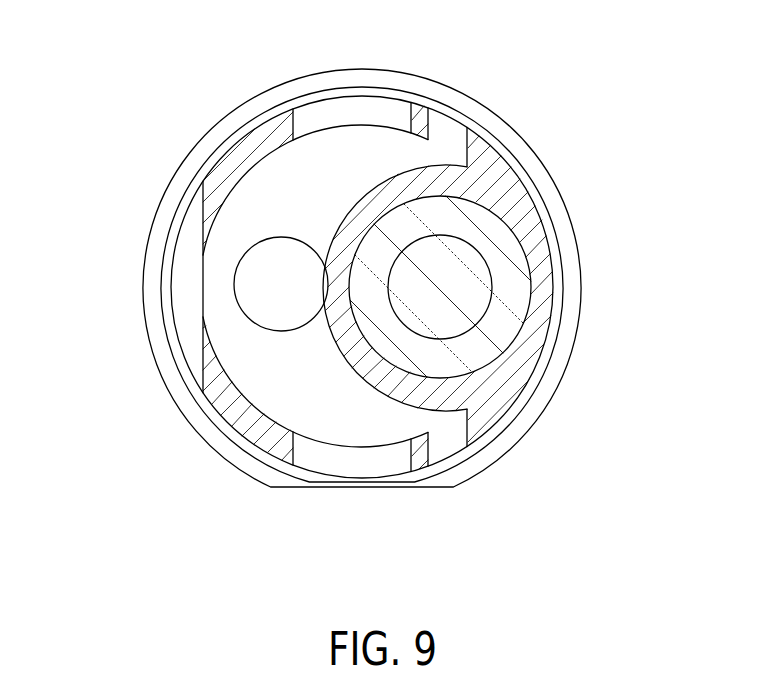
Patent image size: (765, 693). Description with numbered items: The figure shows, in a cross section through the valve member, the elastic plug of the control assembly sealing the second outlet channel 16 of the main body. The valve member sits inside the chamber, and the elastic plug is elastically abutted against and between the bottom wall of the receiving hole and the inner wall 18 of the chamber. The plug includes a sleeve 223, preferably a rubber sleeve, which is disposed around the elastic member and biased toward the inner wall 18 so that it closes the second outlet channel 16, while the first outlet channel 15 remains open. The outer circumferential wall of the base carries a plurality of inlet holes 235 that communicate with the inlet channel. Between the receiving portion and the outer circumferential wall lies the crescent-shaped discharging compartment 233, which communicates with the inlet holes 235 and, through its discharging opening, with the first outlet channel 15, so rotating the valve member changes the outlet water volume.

The first outlet channel 15 is at (258, 305).
The second outlet channel 16 is at (482, 258).
The inner wall of the chamber 18 is at (200, 420).
The sleeve 223 is at (502, 295).
The discharging compartment 233 is at (268, 205).
The inlet holes 235 is at (320, 107).